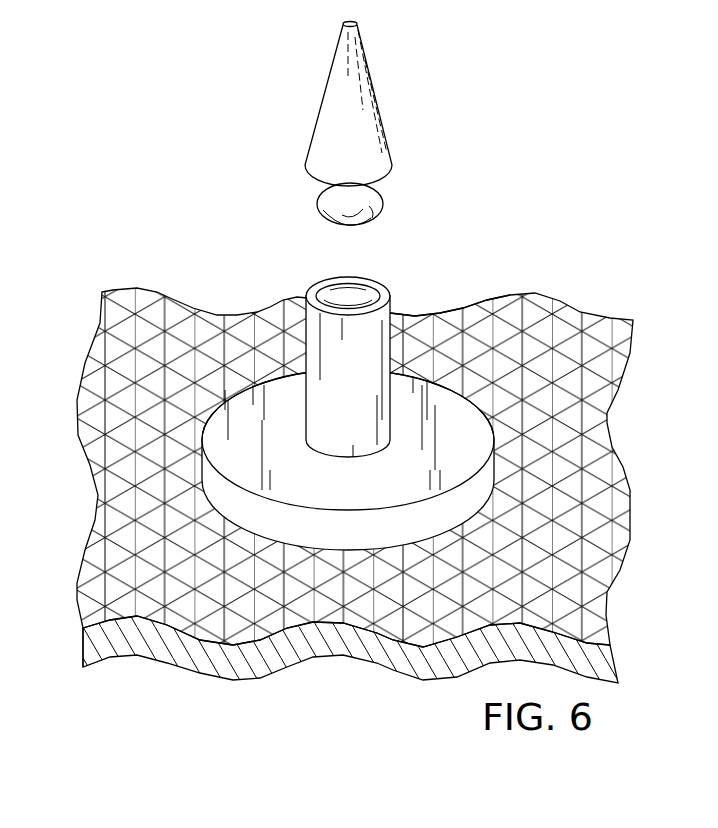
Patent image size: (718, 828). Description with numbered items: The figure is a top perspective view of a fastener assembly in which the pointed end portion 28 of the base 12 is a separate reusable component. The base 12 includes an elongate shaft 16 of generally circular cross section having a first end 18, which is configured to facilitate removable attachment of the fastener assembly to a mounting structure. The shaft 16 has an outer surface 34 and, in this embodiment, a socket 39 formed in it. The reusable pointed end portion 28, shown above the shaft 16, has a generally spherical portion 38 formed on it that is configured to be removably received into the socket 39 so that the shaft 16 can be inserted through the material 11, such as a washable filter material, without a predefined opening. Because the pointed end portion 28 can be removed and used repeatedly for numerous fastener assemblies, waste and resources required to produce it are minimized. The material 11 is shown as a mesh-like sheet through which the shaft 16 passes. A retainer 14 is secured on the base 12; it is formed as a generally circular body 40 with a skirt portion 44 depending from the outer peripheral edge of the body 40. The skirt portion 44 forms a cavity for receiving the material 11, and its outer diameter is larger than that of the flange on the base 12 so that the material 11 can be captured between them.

The material 11 is at (381, 454).
The base 12 is at (294, 352).
The retainer 14 is at (200, 403).
The elongate shaft 16 is at (392, 313).
The first end 18 is at (360, 353).
The pointed end portion 28 is at (368, 122).
The outer surface 34 is at (440, 380).
The generally spherical portion 38 is at (320, 188).
The socket 39 is at (321, 290).
The circular body 40 is at (236, 413).
The skirt portion 44 is at (505, 450).